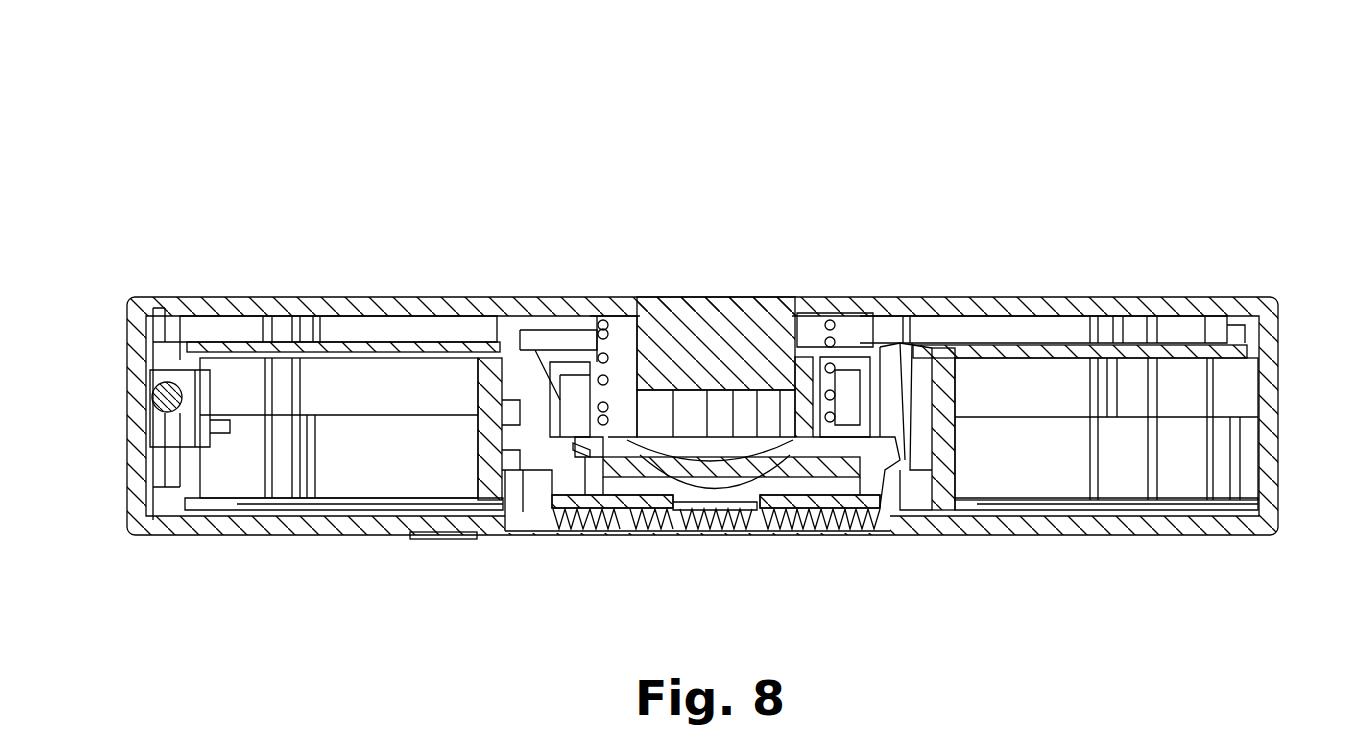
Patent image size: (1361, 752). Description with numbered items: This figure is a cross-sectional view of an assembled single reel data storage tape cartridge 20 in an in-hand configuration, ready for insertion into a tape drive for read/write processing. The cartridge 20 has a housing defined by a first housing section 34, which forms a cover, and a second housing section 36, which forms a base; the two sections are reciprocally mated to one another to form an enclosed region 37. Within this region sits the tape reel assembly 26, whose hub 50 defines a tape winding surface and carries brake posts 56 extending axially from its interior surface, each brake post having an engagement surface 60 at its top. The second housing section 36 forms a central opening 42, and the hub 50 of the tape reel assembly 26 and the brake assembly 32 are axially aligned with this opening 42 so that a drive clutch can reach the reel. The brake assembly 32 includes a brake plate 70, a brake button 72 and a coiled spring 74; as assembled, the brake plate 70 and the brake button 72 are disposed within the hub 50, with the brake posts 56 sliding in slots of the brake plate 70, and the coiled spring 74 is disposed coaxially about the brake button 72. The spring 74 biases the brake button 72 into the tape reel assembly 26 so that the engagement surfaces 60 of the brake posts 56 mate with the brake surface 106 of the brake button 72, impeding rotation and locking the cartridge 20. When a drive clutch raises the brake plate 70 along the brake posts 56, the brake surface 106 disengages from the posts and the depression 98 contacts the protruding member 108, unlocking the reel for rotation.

The single reel data storage tape cartridge 20 is at (216, 164).
The tape reel assembly 26 is at (458, 371).
The brake assembly 32 is at (866, 465).
The first housing section 34 is at (127, 298).
The second housing section 36 is at (133, 535).
The enclosed region 37 is at (1248, 385).
The central opening 42 is at (630, 531).
The hub 50 is at (947, 443).
The brake posts 56 is at (588, 468).
The engagement surface 60 is at (577, 447).
The brake plate 70 is at (525, 505).
The brake button 72 is at (596, 391).
The coiled spring 74 is at (632, 318).
The depression 98 is at (798, 440).
The brake surface 106 is at (620, 440).
The protruding member 108 is at (765, 443).